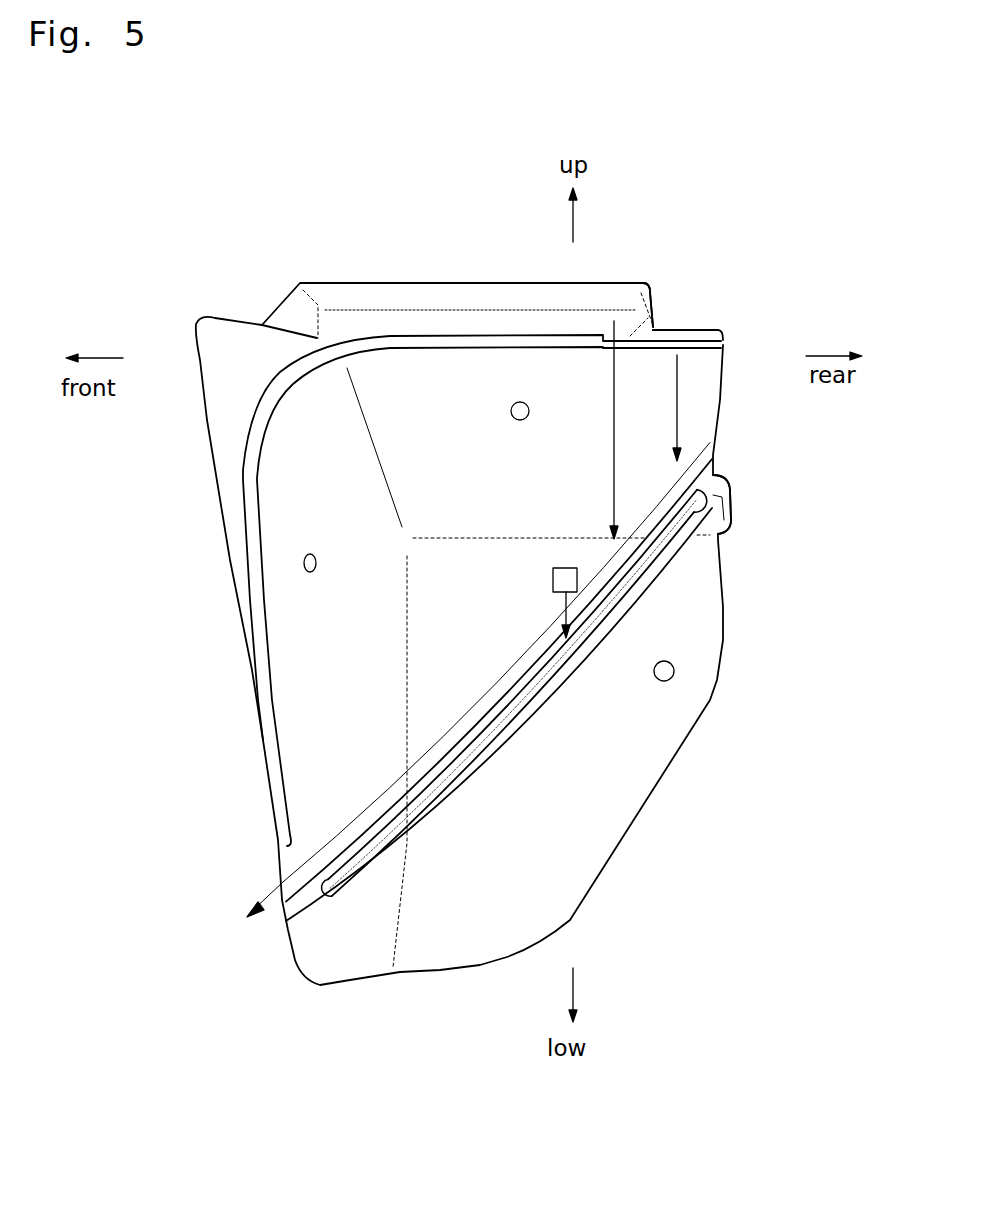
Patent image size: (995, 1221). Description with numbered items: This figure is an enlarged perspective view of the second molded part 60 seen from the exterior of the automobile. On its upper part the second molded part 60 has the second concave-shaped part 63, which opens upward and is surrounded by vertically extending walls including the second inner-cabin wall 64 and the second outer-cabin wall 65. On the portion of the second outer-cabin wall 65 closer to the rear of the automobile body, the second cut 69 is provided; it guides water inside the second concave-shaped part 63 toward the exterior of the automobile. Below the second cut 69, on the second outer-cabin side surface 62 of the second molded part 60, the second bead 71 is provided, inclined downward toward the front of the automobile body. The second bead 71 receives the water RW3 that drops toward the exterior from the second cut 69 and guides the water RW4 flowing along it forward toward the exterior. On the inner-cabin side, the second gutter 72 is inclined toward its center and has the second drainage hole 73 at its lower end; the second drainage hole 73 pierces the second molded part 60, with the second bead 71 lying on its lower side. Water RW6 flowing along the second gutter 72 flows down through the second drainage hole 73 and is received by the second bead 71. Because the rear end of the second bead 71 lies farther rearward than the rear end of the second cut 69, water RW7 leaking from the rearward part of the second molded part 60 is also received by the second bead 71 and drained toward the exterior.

The second molded part 60 is at (698, 170).
The second outer-cabin side surface 62 is at (307, 708).
The second concave-shaped part 63 is at (655, 300).
The second inner-cabin wall 64 is at (377, 283).
The second outer-cabin wall 65 is at (466, 318).
The second cut 69 is at (655, 323).
The second bead 71 is at (527, 720).
The second gutter 72 is at (722, 488).
The second drainage hole 73 is at (553, 580).
The water RW3 is at (612, 462).
The water RW4 is at (485, 695).
The water RW6 is at (560, 603).
The water RW7 is at (680, 398).